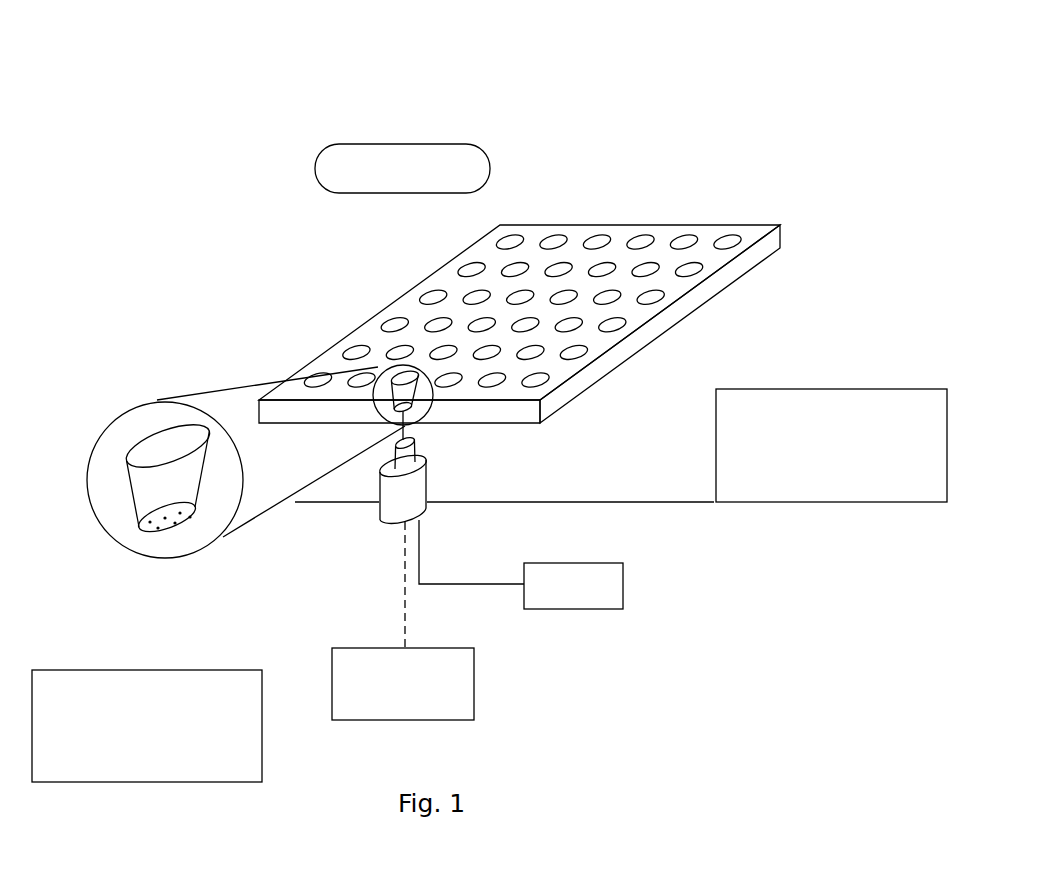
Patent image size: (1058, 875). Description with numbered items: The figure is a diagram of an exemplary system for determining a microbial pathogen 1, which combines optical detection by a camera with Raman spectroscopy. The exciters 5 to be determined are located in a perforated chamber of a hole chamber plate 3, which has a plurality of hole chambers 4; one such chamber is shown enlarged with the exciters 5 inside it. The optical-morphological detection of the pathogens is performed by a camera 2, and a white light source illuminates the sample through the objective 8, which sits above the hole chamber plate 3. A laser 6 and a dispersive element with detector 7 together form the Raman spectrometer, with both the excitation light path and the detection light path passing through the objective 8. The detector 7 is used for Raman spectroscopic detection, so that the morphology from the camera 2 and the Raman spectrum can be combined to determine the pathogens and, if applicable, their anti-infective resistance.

The system for determining a microbial pathogen 1 is at (652, 122).
The camera 2 is at (345, 143).
The hole chamber plate 3 is at (697, 225).
The hole chambers 4 is at (740, 247).
The exciters 5 is at (170, 524).
The laser 6 is at (623, 587).
The dispersive element with detector 7 is at (474, 685).
The objective 8 is at (432, 483).